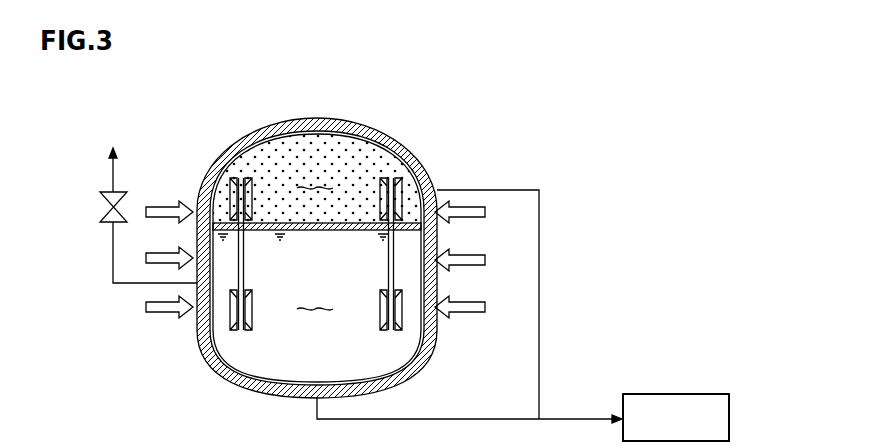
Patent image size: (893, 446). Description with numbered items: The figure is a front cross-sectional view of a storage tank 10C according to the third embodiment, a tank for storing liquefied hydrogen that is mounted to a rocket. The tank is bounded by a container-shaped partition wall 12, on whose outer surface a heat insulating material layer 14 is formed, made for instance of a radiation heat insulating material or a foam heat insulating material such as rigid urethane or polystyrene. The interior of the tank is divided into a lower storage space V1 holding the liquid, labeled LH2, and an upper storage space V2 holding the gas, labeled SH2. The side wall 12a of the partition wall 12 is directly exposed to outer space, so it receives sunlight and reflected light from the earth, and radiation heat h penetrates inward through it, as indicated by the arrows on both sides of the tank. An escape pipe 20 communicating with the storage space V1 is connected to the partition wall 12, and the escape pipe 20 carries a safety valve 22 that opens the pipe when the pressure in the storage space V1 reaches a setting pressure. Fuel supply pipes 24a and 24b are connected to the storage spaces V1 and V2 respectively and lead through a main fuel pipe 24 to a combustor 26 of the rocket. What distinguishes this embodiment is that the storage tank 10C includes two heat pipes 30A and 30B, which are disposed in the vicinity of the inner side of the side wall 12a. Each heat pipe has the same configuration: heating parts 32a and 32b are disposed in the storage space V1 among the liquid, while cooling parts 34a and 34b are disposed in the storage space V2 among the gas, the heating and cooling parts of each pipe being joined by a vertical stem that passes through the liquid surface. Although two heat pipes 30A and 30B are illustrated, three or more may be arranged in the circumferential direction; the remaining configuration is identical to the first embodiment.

The storage tank 10C is at (378, 108).
The partition wall 12 is at (394, 144).
The side wall 12a is at (197, 248).
The heat insulating material layer 14 is at (318, 118).
The escape pipe 20 is at (113, 270).
The safety valve 22 is at (111, 190).
The main fuel pipe 24 is at (570, 419).
The fuel supply pipe 24a is at (476, 419).
The fuel supply pipe 24b is at (492, 190).
The combustor 26 is at (668, 394).
The heat pipe 30A is at (218, 168).
The heat pipe 30B is at (426, 163).
The heating part 32a is at (210, 340).
The heating part 32b is at (428, 340).
The cooling part 34a is at (222, 182).
The cooling part 34b is at (428, 184).
The storage space V1 is at (246, 338).
The storage space V2 is at (262, 172).
The radiation heat h is at (480, 272).
The gaseous hydrogen SH2 is at (314, 177).
The liquid hydrogen LH2 is at (314, 298).